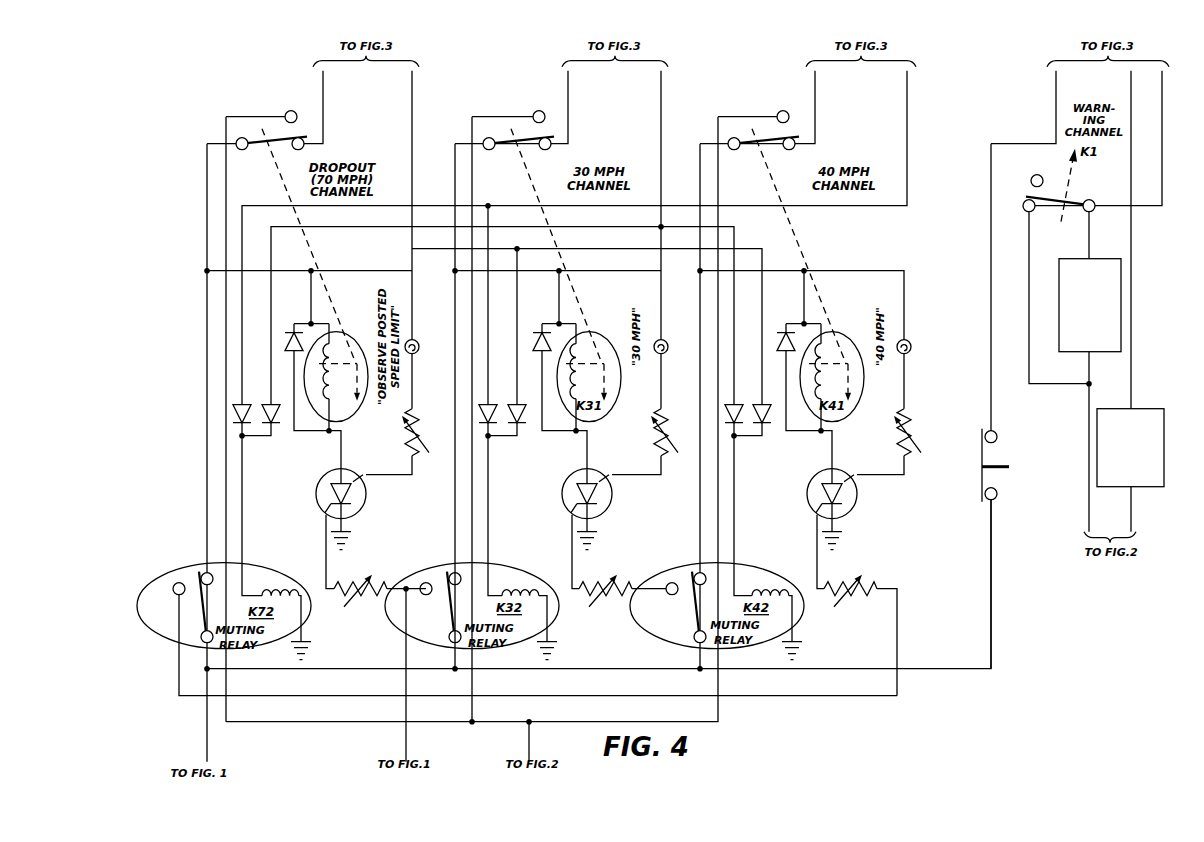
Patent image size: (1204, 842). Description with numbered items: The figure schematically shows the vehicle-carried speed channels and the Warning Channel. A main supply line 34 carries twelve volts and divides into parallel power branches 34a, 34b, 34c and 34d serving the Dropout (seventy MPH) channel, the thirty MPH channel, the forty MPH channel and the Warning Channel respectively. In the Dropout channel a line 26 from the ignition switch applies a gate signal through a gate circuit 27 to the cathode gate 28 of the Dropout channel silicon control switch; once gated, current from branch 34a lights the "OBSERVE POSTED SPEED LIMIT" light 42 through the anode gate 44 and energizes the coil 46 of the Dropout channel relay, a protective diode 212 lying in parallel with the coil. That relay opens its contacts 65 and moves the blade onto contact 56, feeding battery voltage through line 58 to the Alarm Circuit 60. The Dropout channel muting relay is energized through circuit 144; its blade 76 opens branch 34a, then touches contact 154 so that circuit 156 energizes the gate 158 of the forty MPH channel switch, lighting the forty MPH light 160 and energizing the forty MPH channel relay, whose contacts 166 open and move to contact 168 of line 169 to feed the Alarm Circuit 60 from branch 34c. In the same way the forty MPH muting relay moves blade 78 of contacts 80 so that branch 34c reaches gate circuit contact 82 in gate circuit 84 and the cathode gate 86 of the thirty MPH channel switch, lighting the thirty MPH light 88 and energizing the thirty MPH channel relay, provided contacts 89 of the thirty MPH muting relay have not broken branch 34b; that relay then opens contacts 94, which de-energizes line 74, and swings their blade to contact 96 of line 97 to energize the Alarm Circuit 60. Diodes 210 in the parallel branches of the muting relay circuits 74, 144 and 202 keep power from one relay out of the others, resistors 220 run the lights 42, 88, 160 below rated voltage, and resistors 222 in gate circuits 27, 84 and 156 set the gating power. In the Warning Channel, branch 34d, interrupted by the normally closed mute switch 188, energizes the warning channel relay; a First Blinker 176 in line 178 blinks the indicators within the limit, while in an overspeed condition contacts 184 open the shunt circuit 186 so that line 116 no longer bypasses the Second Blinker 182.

The power branch line 34a is at (324, 90).
The contact 56 is at (286, 114).
The relay switch blade 65 is at (284, 137).
The Muting Relay circuit 202 is at (413, 90).
The line 58 is at (227, 180).
The circuit 144 is at (558, 207).
The line 74 is at (662, 90).
The diodes 212 is at (288, 340).
The diodes 210 is at (270, 405).
The coil 46 is at (315, 275).
The "OBSERVE POSTED SPEED LIMIT" light 42 is at (420, 346).
The 30 MPH indicator light 88 is at (668, 344).
The 40 MPH indicator light 160 is at (912, 344).
The resistors 220 is at (411, 458).
The anode gate 44 is at (364, 486).
The cathode gate 86 is at (572, 509).
The gate 158 is at (817, 509).
The cathode gate 28 is at (326, 510).
The gate circuit 27 is at (328, 588).
The gate circuit 84 is at (574, 586).
The resistors 222 is at (354, 584).
The contact 154 is at (175, 594).
The contacts 76 is at (217, 603).
The circuit 156 is at (280, 698).
The Alarm Circuit 60 is at (276, 725).
The main supply line 34 is at (209, 747).
The line 26 is at (407, 741).
The contact 96 is at (536, 114).
The contacts 94 is at (532, 137).
The power branch line 34b is at (569, 90).
The line 97 is at (473, 180).
The switch contacts 89 is at (465, 600).
The contact 168 is at (781, 114).
The contacts 166 is at (782, 137).
The power branch line 34c is at (816, 90).
The line 169 is at (719, 180).
The gate circuit contact 82 is at (669, 594).
The contact blade 78 is at (696, 602).
The contacts 80 is at (705, 599).
The Warning Mute Switch 188 is at (983, 478).
The power branch line 34d is at (992, 627).
The line 178 is at (1132, 93).
The alarm-indicator circuit line 116 is at (1163, 93).
The contacts 184 is at (1035, 212).
The shunt circuit 186 is at (1030, 368).
The Second Blinker 182 is at (1090, 305).
The First Blinker 176 is at (1130, 448).